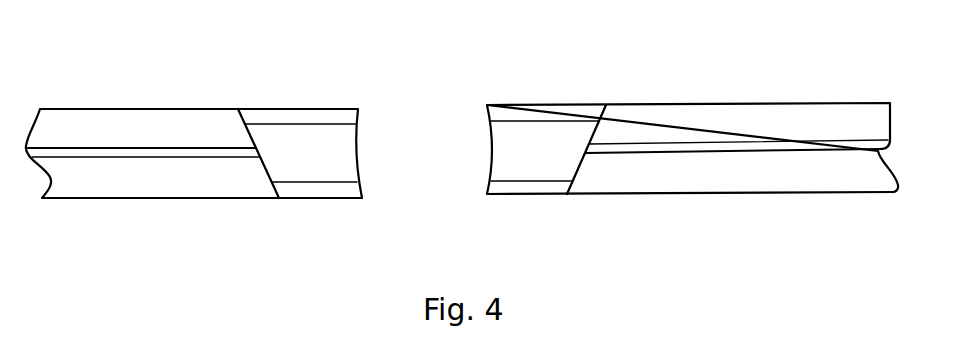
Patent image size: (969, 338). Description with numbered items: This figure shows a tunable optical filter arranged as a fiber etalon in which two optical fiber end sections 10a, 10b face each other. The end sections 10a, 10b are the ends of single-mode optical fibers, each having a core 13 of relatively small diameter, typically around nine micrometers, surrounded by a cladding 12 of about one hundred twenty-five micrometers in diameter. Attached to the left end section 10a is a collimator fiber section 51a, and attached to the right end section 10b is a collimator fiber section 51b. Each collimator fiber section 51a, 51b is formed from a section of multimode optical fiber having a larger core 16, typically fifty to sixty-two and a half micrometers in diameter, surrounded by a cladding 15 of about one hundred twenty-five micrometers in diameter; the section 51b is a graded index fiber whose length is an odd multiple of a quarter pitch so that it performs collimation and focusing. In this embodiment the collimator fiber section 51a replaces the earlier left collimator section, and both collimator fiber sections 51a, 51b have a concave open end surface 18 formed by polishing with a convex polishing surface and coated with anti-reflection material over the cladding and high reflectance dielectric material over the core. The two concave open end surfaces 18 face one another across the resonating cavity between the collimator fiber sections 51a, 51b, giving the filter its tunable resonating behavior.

The optical fiber end section 10a is at (148, 224).
The optical fiber end section 10b is at (747, 93).
The cladding 12 is at (115, 190).
The core 13 is at (155, 153).
The cladding 15 is at (325, 193).
The core 16 is at (305, 140).
The concave open end surface 18 is at (452, 117).
The collimator fiber section 51a is at (302, 88).
The collimator fiber section 51b is at (534, 214).